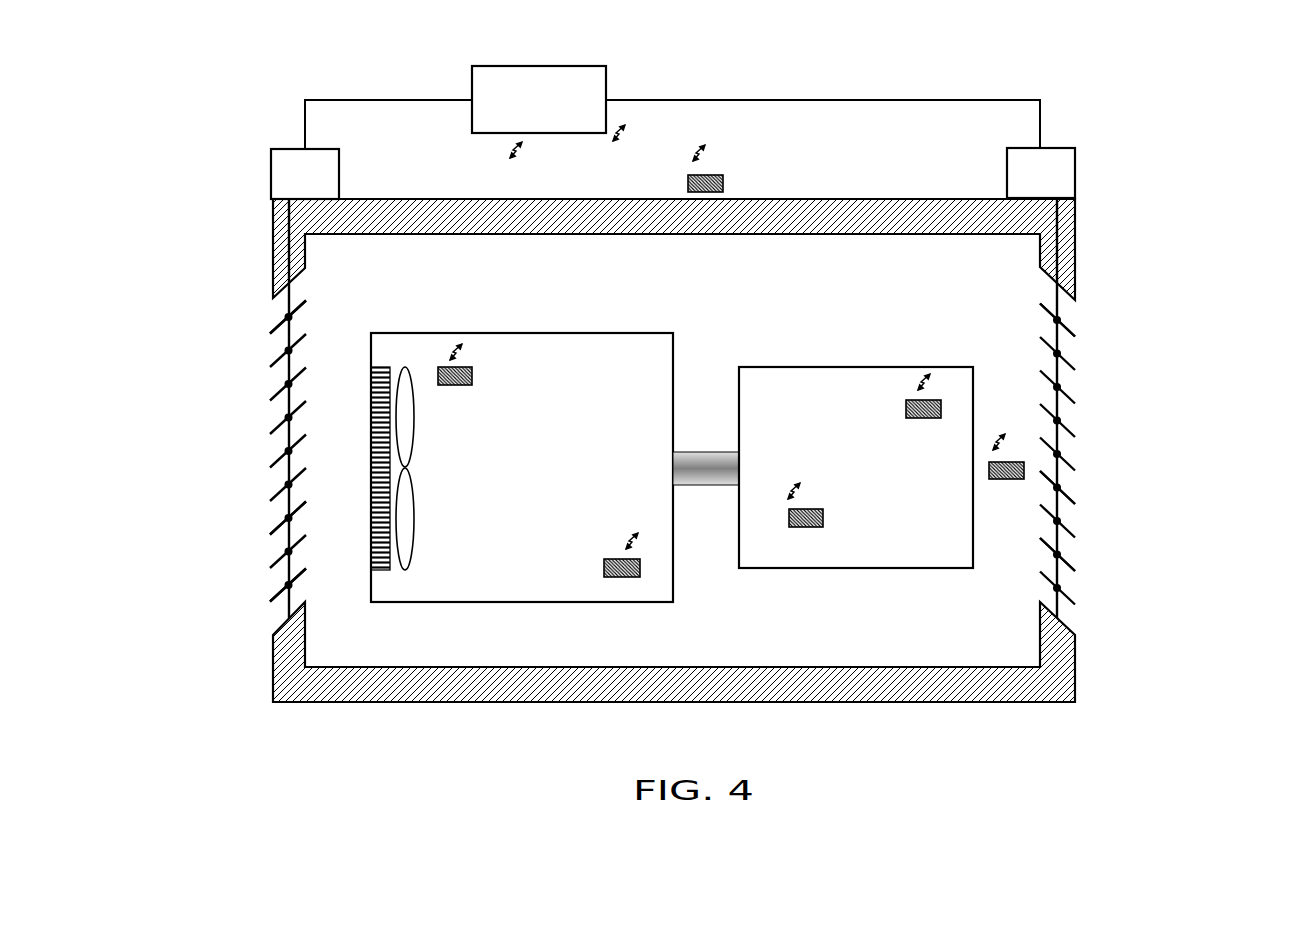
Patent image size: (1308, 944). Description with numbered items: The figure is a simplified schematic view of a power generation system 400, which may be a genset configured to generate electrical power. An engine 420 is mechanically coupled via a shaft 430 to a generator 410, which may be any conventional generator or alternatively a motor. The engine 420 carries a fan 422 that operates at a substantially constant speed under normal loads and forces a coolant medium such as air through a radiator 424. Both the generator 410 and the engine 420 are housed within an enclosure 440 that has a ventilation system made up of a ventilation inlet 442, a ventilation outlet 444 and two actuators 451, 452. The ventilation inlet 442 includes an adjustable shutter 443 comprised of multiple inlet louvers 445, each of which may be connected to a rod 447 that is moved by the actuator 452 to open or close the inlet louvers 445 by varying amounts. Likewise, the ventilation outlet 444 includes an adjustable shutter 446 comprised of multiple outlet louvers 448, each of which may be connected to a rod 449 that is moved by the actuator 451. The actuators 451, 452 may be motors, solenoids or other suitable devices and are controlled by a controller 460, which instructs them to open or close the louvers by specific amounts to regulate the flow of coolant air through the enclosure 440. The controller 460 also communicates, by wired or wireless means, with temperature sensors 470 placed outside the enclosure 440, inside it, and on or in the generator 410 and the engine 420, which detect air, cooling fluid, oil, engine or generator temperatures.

The power generation system 400 is at (1018, 68).
The generator 410 is at (851, 482).
The engine 420 is at (518, 482).
The fan 422 is at (405, 366).
The radiator 424 is at (392, 576).
The shaft 430 is at (707, 486).
The enclosure 440 is at (1032, 702).
The ventilation inlet 442 is at (1222, 433).
The adjustable shutter 443 is at (1104, 472).
The ventilation outlet 444 is at (133, 446).
The inlet louvers 445 is at (1070, 557).
The adjustable shutter 446 is at (233, 514).
The rod 447 is at (1060, 319).
The outlet louvers 448 is at (286, 586).
The rod 449 is at (286, 316).
The actuator 451 is at (283, 188).
The actuator 452 is at (1019, 187).
The controller 460 is at (517, 113).
The temperature sensors 470 is at (624, 578).